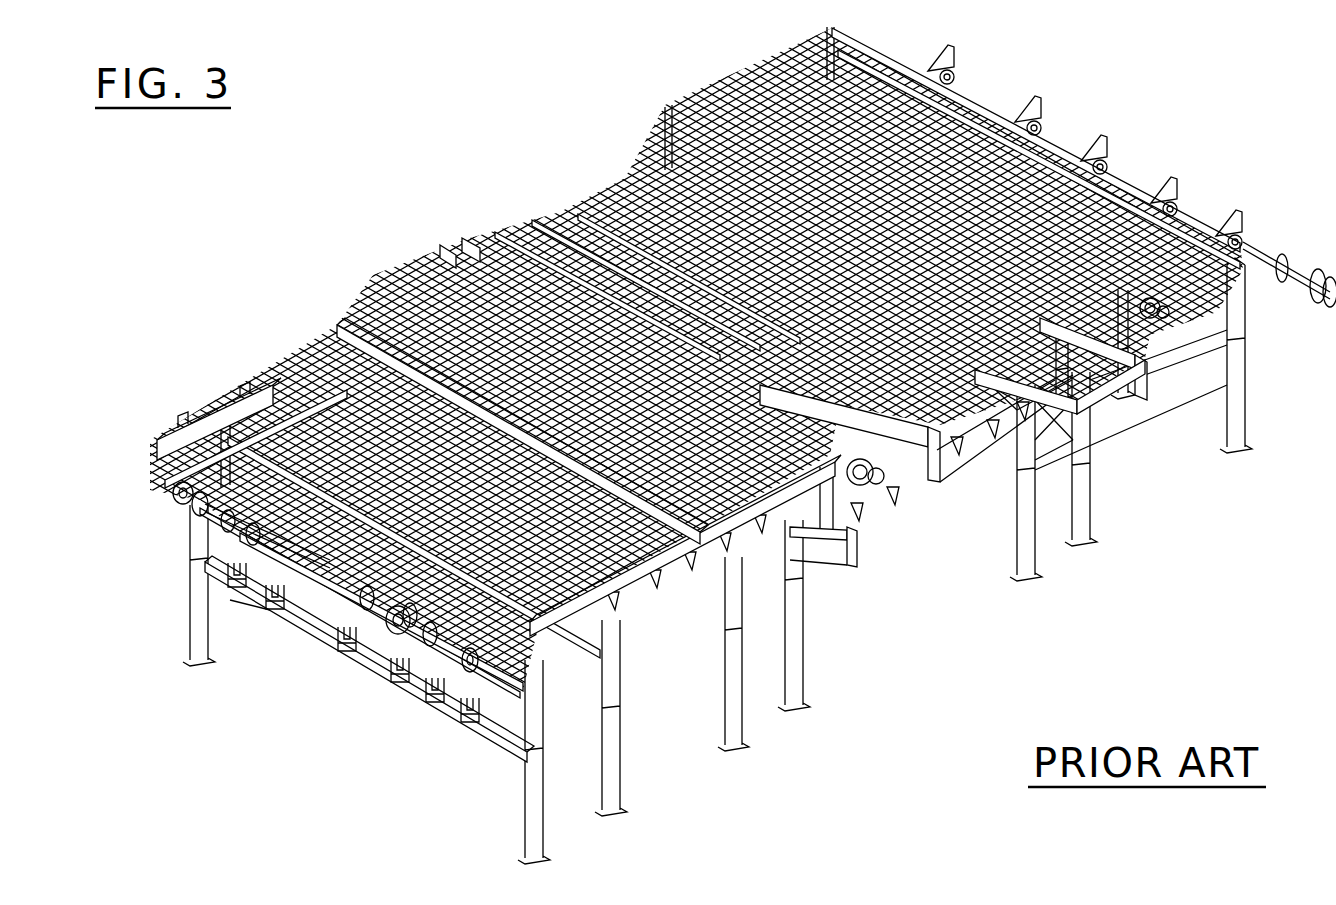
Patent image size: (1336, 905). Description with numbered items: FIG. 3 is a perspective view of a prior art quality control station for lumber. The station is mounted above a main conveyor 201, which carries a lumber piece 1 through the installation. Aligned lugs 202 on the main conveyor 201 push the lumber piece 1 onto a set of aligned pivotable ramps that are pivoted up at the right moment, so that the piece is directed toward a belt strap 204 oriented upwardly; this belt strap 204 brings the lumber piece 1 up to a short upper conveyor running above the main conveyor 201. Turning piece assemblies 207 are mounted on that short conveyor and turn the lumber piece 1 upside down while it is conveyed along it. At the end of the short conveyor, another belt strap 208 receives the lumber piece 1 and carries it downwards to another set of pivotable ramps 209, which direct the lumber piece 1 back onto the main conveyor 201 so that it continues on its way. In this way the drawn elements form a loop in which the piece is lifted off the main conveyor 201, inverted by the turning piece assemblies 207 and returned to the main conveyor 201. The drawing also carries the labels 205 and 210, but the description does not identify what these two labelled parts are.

The lumber piece 1 is at (405, 258).
The main conveyor 201 is at (633, 563).
The aligned lugs 202 is at (345, 372).
The belt strap 204 is at (328, 335).
The lug 205 is at (468, 243).
The turning piece assemblies 207 is at (455, 245).
The belt strap 208 is at (495, 232).
The pivotable ramps 209 is at (578, 215).
The conveyor rail 210 is at (532, 220).